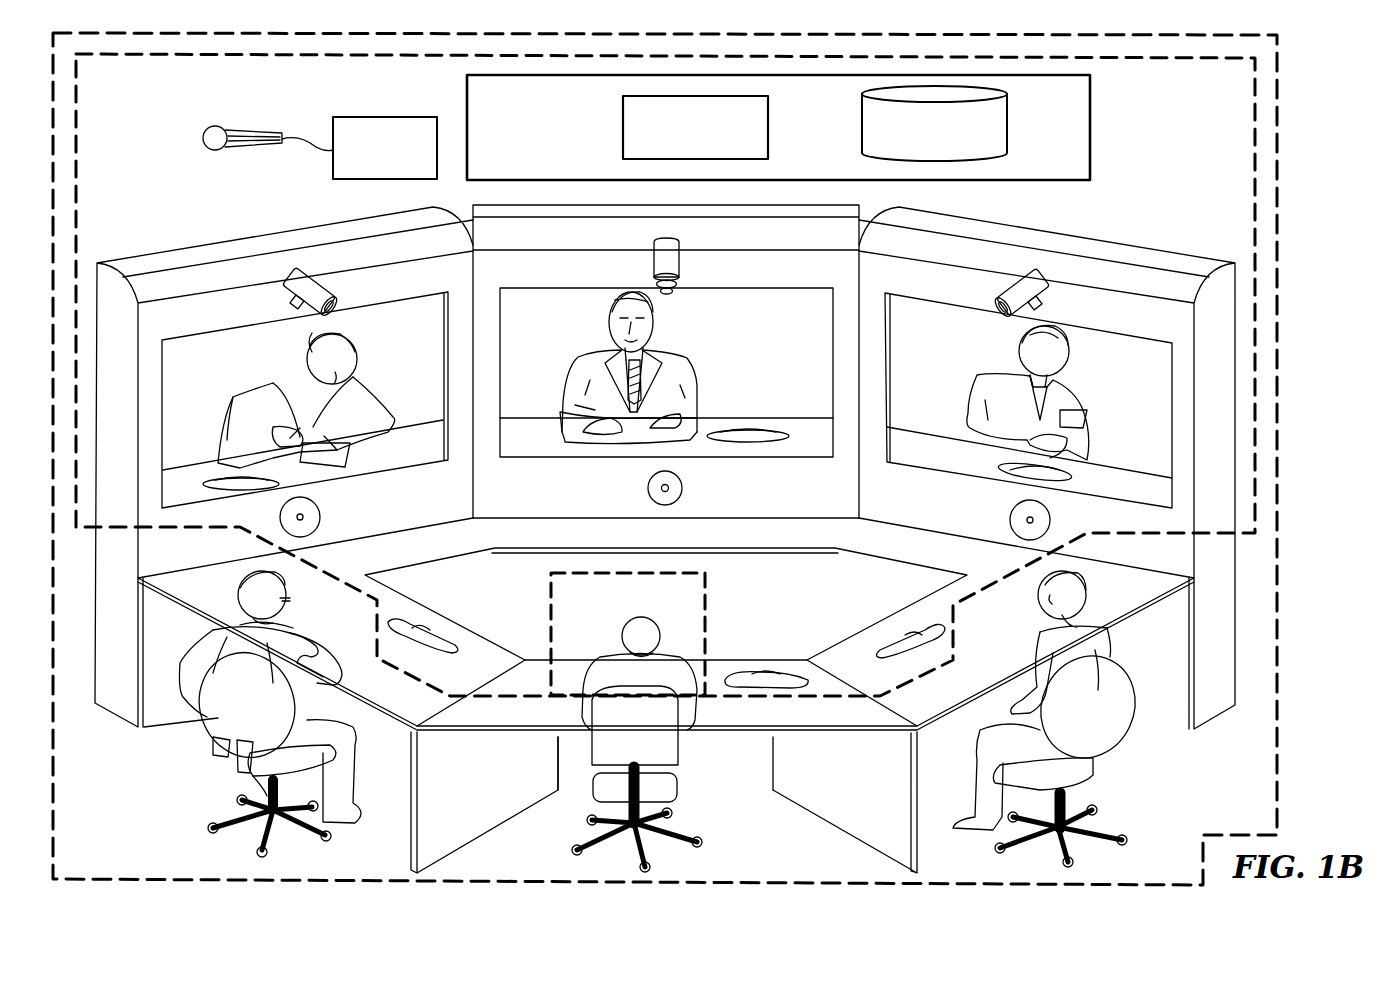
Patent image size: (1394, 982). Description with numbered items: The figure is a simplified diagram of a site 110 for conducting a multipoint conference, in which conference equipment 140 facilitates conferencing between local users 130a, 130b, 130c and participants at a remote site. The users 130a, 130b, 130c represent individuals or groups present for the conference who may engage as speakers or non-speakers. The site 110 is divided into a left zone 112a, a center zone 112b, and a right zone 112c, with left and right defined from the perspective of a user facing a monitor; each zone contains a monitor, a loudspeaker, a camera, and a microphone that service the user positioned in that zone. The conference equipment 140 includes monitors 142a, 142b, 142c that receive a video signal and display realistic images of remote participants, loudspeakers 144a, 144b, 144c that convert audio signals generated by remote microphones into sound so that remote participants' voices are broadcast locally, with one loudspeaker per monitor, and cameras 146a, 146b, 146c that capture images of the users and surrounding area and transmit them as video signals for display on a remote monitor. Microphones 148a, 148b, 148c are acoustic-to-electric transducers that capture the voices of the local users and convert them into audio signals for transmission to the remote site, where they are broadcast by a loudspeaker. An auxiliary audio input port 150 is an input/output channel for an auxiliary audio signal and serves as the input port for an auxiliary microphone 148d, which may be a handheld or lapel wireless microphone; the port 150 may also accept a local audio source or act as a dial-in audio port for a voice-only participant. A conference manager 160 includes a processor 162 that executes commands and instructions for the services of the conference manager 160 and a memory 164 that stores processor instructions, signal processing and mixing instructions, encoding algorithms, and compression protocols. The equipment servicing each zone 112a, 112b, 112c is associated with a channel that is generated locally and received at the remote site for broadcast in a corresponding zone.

The site 110 is at (1280, 664).
The left zone 112a is at (190, 793).
The center zone 112b is at (794, 859).
The right zone 112c is at (1191, 801).
The user 130a is at (305, 638).
The user 130b is at (607, 657).
The user 130c is at (1040, 650).
The conference equipment 140 is at (154, 162).
The monitor 142a is at (418, 344).
The monitor 142b is at (785, 346).
The monitor 142c is at (962, 345).
The loudspeaker 144a is at (321, 517).
The loudspeaker 144b is at (683, 488).
The loudspeaker 144c is at (1009, 518).
The camera 146a is at (318, 266).
The camera 146b is at (681, 262).
The camera 146c is at (1017, 270).
The microphone 148a is at (445, 630).
The microphone 148b is at (765, 672).
The microphone 148c is at (892, 635).
The auxiliary microphone 148d is at (250, 130).
The auxiliary audio input port (AAIP) 150 is at (375, 116).
The conference manager 160 is at (819, 127).
The processor 162 is at (770, 122).
The memory 164 is at (1009, 124).